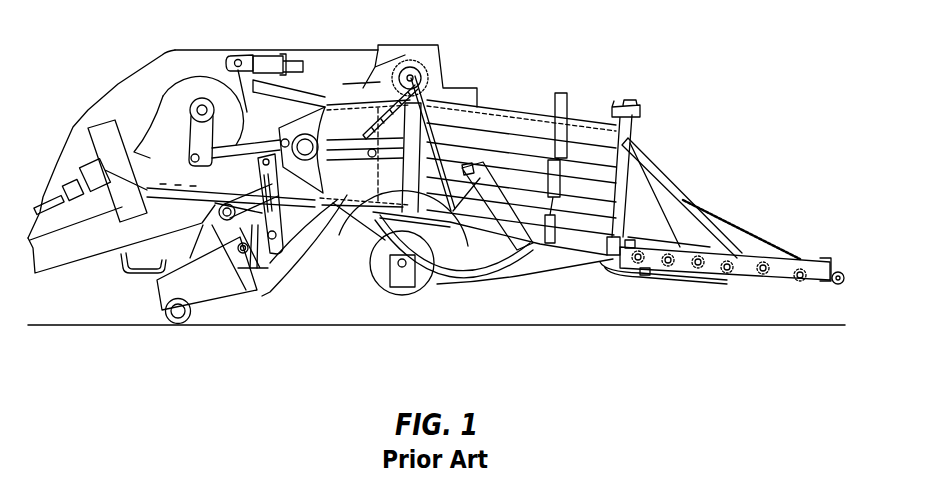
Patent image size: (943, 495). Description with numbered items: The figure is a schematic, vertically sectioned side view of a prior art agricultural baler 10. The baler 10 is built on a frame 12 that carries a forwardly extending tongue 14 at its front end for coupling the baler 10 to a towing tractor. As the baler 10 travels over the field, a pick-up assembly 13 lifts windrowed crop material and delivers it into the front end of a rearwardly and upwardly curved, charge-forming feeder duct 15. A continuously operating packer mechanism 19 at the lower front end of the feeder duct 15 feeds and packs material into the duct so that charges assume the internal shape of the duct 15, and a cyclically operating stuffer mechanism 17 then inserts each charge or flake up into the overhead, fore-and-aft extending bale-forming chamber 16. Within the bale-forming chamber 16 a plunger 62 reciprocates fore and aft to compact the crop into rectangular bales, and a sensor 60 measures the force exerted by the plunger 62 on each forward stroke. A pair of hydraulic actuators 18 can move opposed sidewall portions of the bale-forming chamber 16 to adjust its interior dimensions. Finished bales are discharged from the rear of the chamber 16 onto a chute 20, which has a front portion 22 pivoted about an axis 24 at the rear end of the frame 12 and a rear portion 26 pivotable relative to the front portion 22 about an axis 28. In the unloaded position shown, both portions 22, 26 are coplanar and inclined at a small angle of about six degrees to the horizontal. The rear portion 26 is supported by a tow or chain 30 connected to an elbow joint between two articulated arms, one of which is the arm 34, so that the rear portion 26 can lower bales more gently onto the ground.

The agricultural baler 10 is at (474, 30).
The frame 12 is at (323, 213).
The pick-up assembly 13 is at (321, 326).
The tongue 14 is at (77, 253).
The feeder duct 15 is at (300, 268).
The bale-forming chamber 16 is at (497, 140).
The stuffer mechanism 17 is at (277, 258).
The hydraulic actuators 18 is at (566, 163).
The packer mechanism 19 is at (257, 258).
The chute 20 is at (772, 178).
The front portion 22 is at (677, 247).
The axis 24 is at (637, 247).
The rear portion 26 is at (807, 258).
The axis 28 is at (748, 272).
The chain 30 is at (748, 233).
The arm 34 is at (652, 158).
The sensor 60 is at (270, 57).
The plunger 62 is at (324, 90).